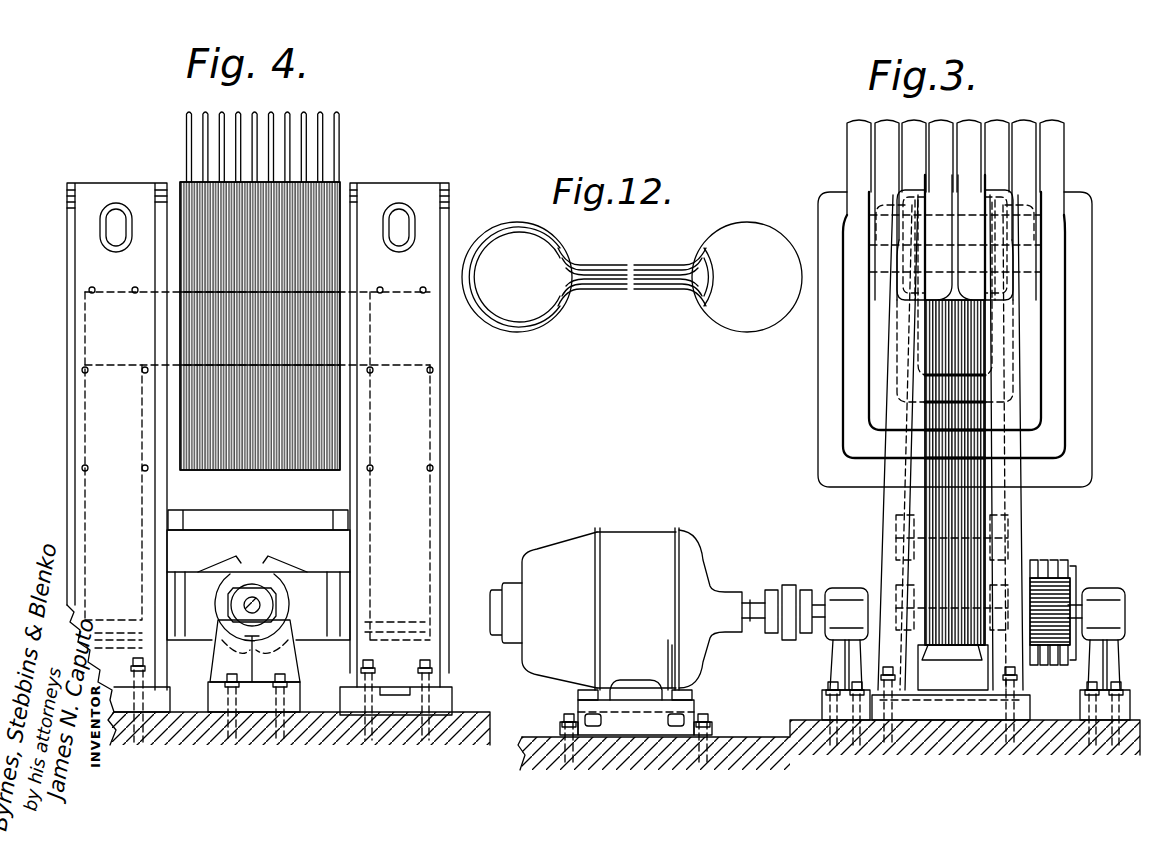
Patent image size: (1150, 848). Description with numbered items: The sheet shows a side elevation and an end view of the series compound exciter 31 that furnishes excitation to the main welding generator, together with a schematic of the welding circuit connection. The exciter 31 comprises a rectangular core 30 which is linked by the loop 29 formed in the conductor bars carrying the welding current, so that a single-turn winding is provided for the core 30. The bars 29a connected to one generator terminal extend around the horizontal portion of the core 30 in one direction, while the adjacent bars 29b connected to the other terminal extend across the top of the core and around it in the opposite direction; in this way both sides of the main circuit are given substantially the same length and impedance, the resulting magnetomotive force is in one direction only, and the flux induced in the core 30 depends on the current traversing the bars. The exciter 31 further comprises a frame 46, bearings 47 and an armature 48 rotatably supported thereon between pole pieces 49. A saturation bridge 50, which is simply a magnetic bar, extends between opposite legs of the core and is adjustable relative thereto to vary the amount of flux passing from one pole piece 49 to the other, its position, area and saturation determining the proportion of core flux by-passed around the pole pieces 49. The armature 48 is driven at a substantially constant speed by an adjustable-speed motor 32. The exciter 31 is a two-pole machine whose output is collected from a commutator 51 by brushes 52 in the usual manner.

In FIG. 3, the loop 29 is at (816, 403).
In FIG. 4, the bars 29a is at (335, 165).
In FIG. 3, the bars 29a is at (886, 142).
In FIG. 4, the adjacent bars 29b is at (333, 200).
In FIG. 3, the adjacent bars 29b is at (846, 300).
In FIG. 4, the core 30 is at (432, 365).
In FIG. 3, the core 30 is at (986, 501).
In FIG. 3, the series compound exciter 31 is at (974, 787).
In FIG. 3, the motor 32 is at (627, 533).
In FIG. 4, the frame 46 is at (100, 437).
In FIG. 3, the frame 46 is at (882, 509).
In FIG. 4, the bearings 47 is at (240, 656).
In FIG. 3, the bearings 47 is at (846, 661).
In FIG. 4, the armature 48 is at (256, 572).
In FIG. 4, the pole pieces 49 is at (211, 566).
In FIG. 4, the saturation bridge 50 is at (263, 512).
In FIG. 3, the saturation bridge 50 is at (900, 549).
In FIG. 3, the commutator 51 is at (1074, 590).
In FIG. 3, the brushes 52 is at (1050, 575).